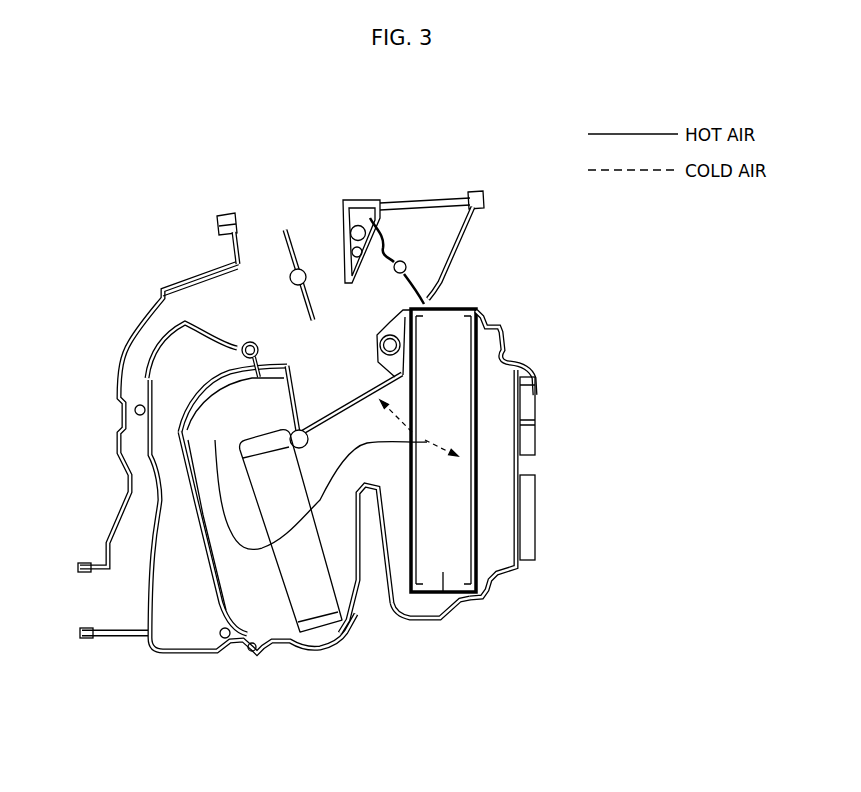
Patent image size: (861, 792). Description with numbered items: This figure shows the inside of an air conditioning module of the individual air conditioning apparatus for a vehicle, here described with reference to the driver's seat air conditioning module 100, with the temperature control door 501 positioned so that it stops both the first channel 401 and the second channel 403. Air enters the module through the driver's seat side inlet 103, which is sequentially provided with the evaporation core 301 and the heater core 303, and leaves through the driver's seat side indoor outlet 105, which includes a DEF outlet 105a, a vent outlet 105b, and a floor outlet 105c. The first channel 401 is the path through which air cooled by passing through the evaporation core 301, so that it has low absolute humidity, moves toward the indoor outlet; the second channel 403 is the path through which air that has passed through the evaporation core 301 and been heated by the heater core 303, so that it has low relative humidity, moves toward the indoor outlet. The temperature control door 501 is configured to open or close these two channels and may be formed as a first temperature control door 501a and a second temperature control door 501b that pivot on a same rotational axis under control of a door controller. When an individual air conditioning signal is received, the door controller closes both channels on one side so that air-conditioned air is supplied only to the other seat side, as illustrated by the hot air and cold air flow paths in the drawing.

The driver's seat air conditioning module 100 is at (126, 302).
The driver's seat side inlet 103 is at (492, 465).
The driver's seat side indoor outlet 105 is at (335, 298).
The DEF outlet 105a is at (428, 242).
The vent outlet 105b is at (263, 235).
The floor outlet 105c is at (182, 366).
The evaporation core 301 is at (452, 369).
The heater core 303 is at (313, 608).
The first channel 401 is at (427, 442).
The second channel 403 is at (392, 447).
The temperature control door 501 is at (276, 402).
The first temperature control door 501a is at (352, 395).
The second temperature control door 501b is at (297, 366).